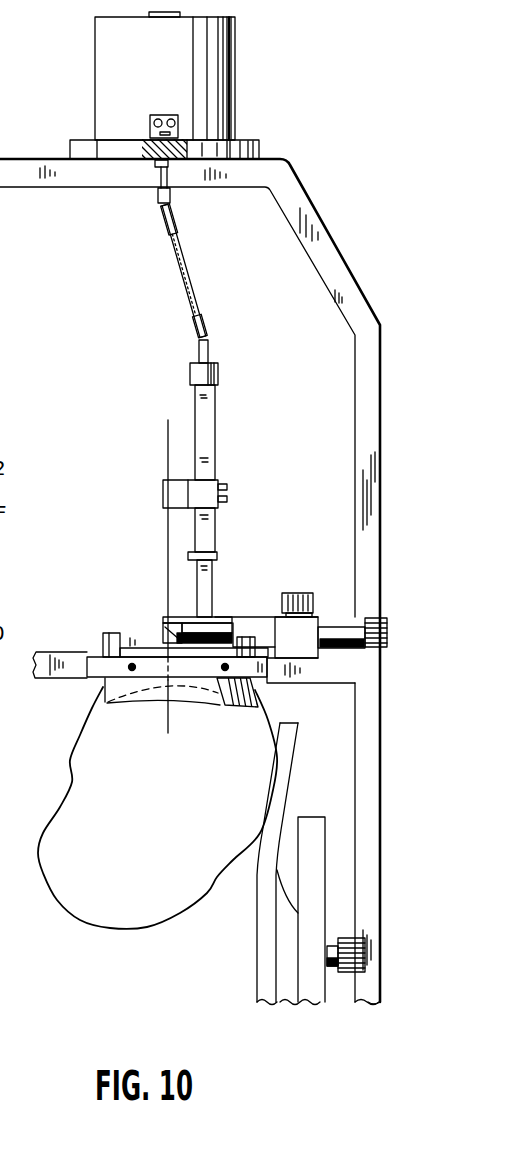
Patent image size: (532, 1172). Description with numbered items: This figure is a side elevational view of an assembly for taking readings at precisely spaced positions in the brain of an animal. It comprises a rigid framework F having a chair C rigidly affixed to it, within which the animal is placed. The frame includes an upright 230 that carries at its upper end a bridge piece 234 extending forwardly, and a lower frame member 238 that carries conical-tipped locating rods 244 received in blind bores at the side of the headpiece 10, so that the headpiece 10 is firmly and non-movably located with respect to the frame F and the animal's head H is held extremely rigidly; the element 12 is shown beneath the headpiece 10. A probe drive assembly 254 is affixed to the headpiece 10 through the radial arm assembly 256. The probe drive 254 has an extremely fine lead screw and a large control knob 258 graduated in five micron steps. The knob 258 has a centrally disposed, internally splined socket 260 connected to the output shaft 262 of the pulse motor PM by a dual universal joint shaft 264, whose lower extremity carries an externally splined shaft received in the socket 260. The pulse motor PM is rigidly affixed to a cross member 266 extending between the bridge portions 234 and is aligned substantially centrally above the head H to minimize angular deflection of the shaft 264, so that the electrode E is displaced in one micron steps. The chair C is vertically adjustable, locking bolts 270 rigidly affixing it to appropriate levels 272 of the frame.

The headpiece 10 is at (137, 646).
The lens element 12 is at (98, 700).
The upright 230 is at (370, 473).
The bridge piece 234 is at (30, 173).
The lower frame member 238 is at (50, 657).
The locating rods 244 is at (132, 672).
The probe drive assembly 254 is at (229, 474).
The radial arm assembly 256 is at (247, 620).
The control knob 258 is at (200, 373).
The internally splined socket 260 is at (200, 355).
The output shaft 262 is at (161, 177).
The dual universal joint shaft 264 is at (209, 285).
The cross member 266 is at (178, 159).
The locking bolts 270 is at (348, 973).
The levels 272 is at (313, 837).
The pulse motor PM is at (115, 52).
The animal's head H is at (87, 747).
The chair C is at (288, 753).
The rigid framework F is at (346, 519).
The electrode E is at (168, 450).